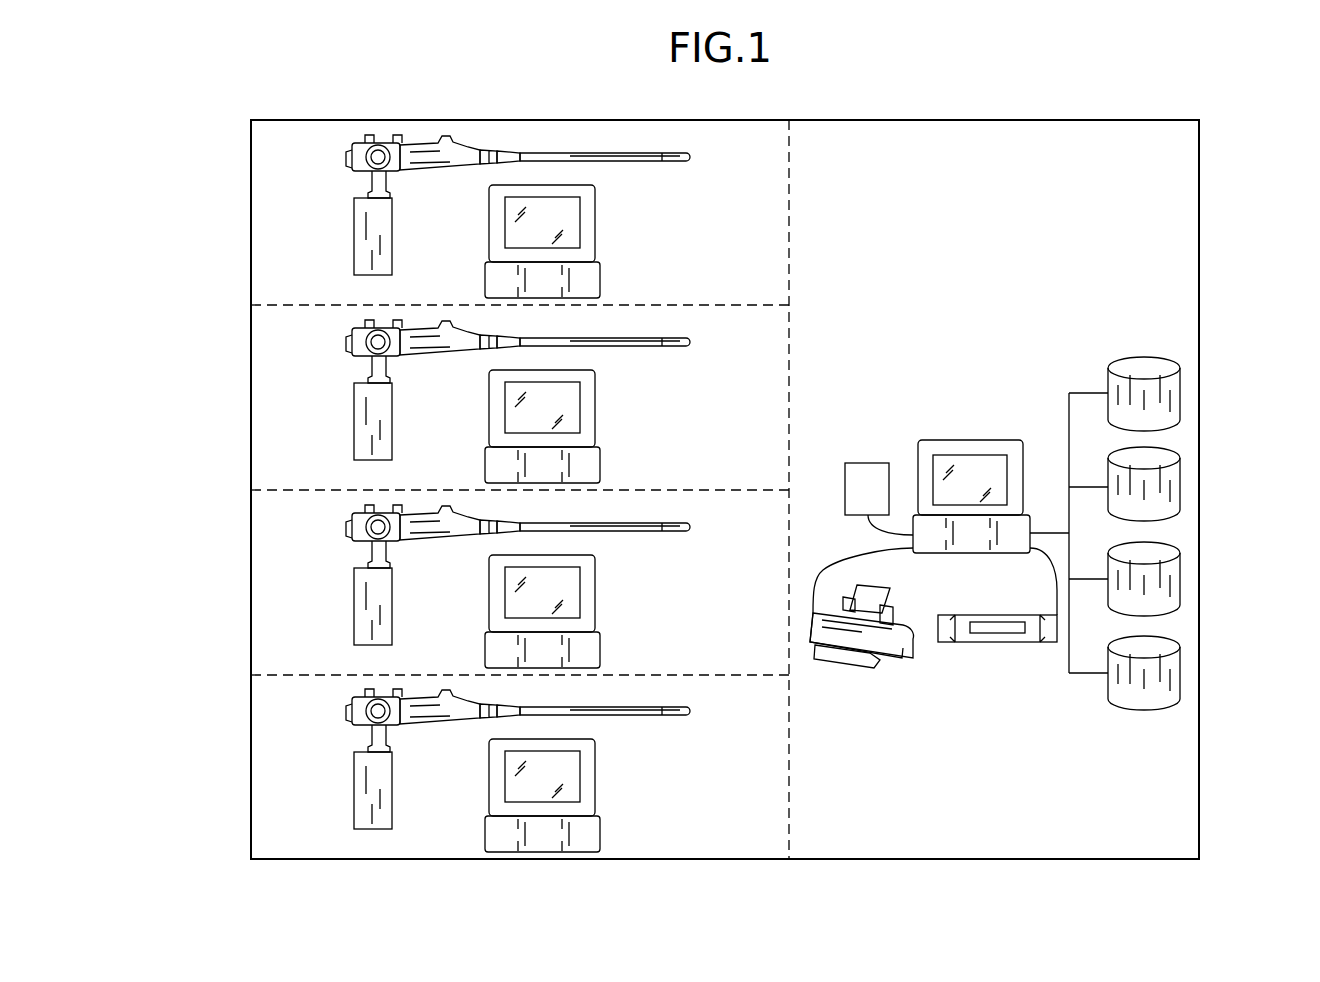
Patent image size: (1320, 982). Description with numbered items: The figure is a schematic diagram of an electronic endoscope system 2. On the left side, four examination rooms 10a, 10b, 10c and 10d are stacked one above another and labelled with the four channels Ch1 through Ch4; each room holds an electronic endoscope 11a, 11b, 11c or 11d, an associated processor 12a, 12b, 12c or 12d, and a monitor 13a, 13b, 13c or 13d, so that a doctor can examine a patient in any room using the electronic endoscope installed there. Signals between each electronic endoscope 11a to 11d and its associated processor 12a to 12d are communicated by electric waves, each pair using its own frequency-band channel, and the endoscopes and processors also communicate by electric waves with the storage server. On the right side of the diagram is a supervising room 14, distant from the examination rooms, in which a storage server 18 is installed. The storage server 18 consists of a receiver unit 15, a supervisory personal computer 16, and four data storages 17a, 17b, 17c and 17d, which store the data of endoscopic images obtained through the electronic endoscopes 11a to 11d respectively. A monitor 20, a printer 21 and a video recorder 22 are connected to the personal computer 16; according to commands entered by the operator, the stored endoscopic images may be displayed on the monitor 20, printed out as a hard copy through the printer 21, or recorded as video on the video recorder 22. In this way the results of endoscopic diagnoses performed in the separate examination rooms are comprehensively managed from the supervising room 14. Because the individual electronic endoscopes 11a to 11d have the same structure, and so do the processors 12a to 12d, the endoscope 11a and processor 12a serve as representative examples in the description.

The electronic endoscope system 2 is at (846, 107).
The examination room 10a is at (268, 288).
The examination room 10b is at (268, 473).
The examination room 10c is at (268, 658).
The examination room 10d is at (268, 842).
The electronic endoscope 11a is at (430, 171).
The electronic endoscope 11b is at (430, 356).
The electronic endoscope 11c is at (430, 541).
The electronic endoscope 11d is at (430, 725).
The processor 12a is at (600, 279).
The processor 12b is at (600, 464).
The processor 12c is at (600, 649).
The processor 12d is at (600, 833).
The monitor 13a is at (580, 222).
The monitor 13b is at (580, 407).
The monitor 13c is at (580, 592).
The monitor 13d is at (580, 776).
The supervising room 14 is at (1183, 231).
The receiver unit 15 is at (866, 463).
The supervisory personal computer 16 is at (970, 553).
The data storage 17a is at (1170, 398).
The data storage 17b is at (1170, 488).
The data storage 17c is at (1170, 583).
The data storage 17d is at (1170, 677).
The storage server 18 is at (997, 404).
The monitor 20 is at (953, 455).
The printer 21 is at (840, 662).
The video recorder 22 is at (995, 642).